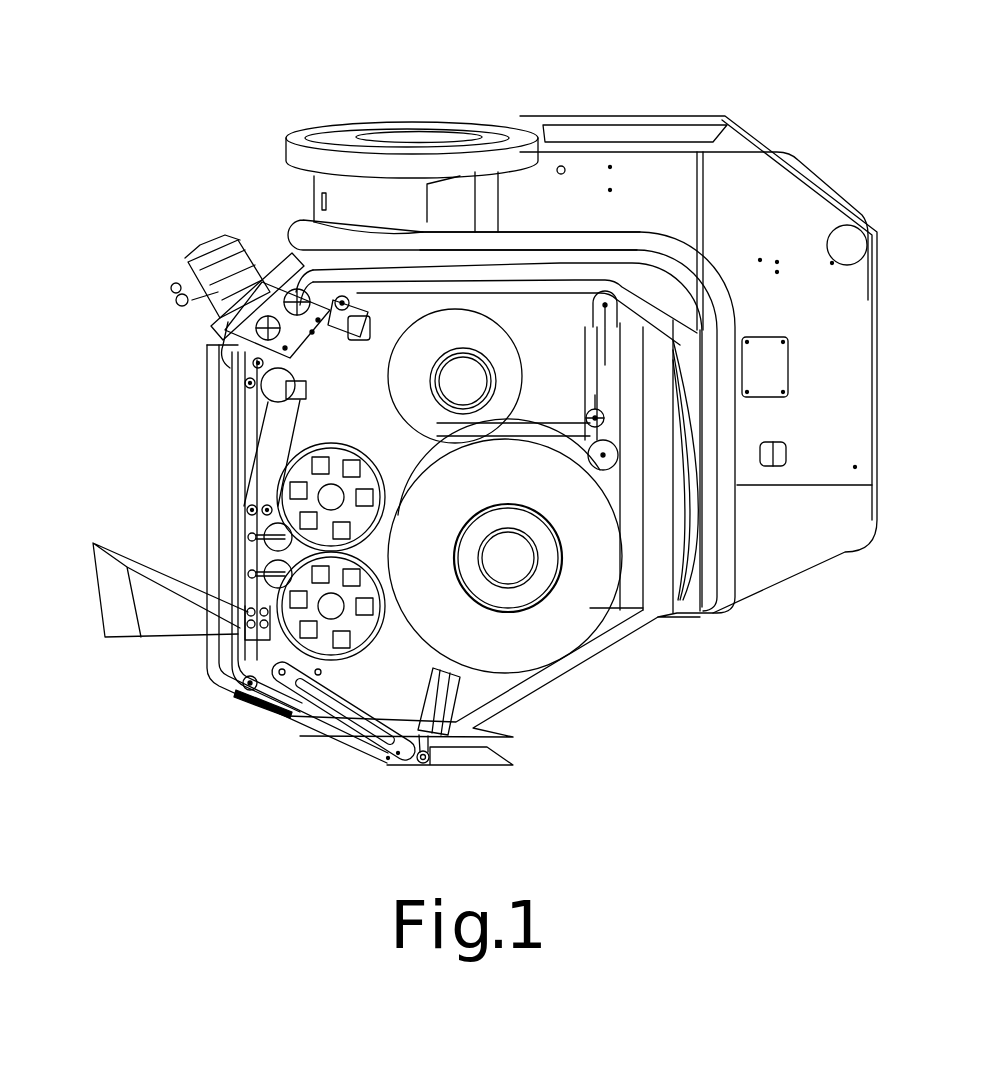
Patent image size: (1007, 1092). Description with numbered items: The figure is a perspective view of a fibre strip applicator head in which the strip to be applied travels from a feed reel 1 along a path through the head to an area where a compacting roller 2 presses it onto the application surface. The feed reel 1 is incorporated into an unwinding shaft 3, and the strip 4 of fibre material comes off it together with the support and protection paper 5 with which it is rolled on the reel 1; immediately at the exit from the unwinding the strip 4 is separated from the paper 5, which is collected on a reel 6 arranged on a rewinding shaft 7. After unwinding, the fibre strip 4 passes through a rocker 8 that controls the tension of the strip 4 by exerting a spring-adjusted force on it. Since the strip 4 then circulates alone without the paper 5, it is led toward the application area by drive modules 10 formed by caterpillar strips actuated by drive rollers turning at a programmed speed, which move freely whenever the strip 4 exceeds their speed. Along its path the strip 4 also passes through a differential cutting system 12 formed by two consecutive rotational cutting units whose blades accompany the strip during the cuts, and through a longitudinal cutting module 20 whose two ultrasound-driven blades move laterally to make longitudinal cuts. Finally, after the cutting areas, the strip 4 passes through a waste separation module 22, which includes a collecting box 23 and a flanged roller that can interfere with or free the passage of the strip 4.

The feed reel 1 is at (590, 593).
The compacting roller 2 is at (420, 763).
The unwinding shaft 3 is at (508, 568).
The strip of fibre material 4 is at (612, 404).
The support and protection paper 5 is at (538, 430).
The reel 6 is at (478, 340).
The rewinding shaft 7 is at (462, 379).
The rocker 8 is at (595, 365).
The drive modules 10 is at (230, 420).
The differential cutting system 12 is at (253, 543).
The longitudinal cutting module 20 is at (230, 240).
The waste separation module 22 is at (245, 620).
The collecting box 23 is at (160, 600).